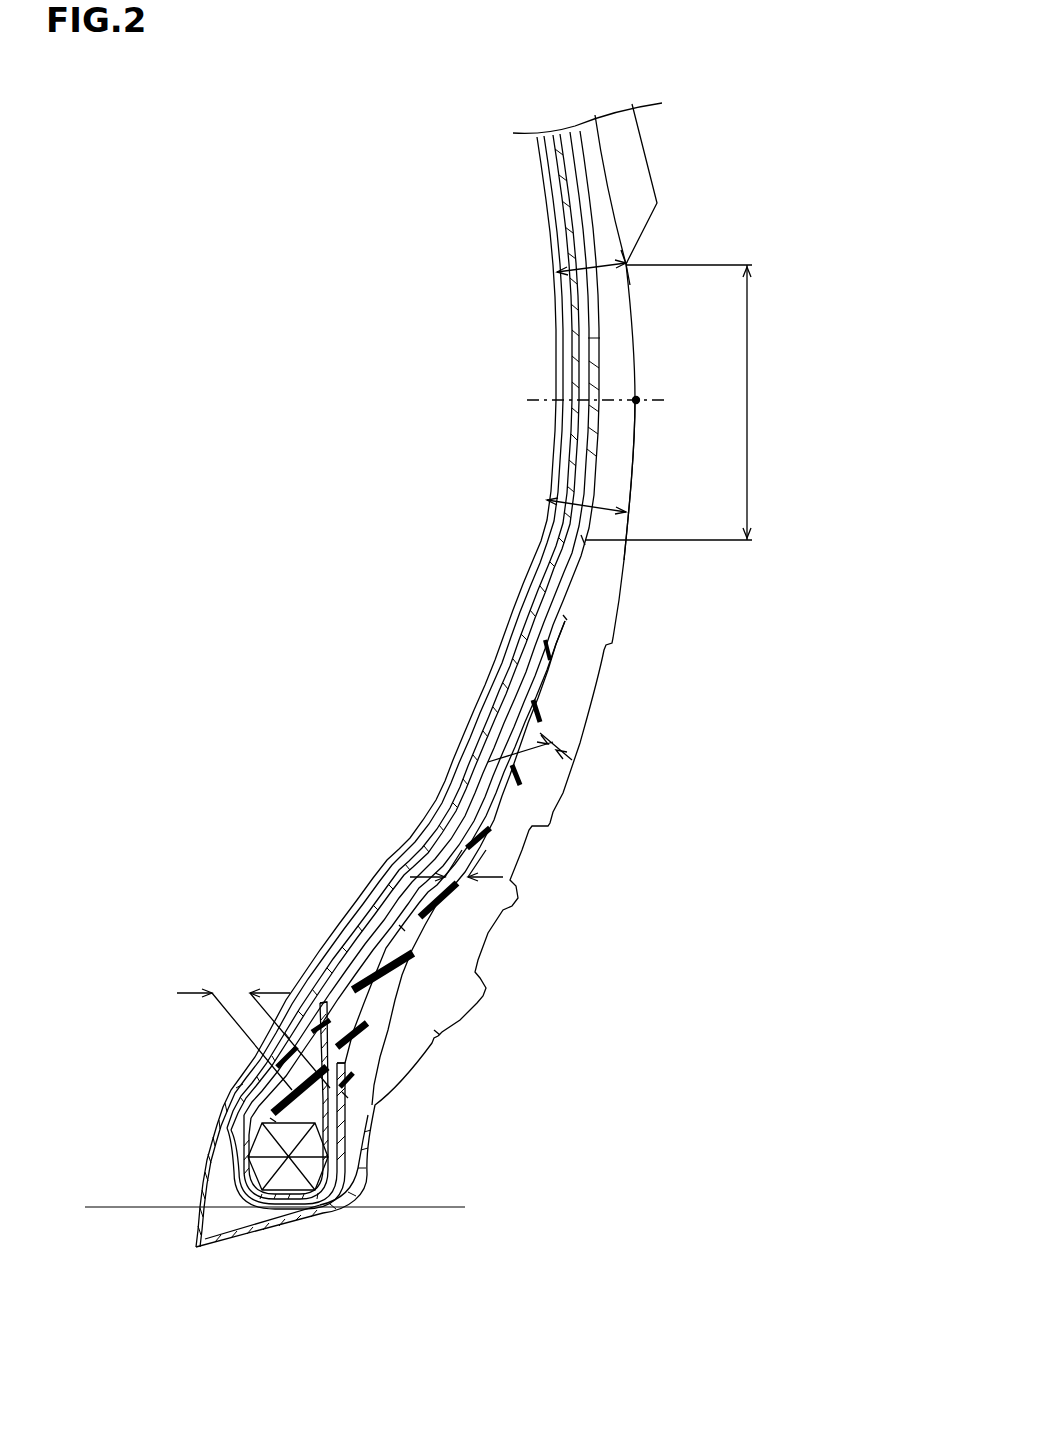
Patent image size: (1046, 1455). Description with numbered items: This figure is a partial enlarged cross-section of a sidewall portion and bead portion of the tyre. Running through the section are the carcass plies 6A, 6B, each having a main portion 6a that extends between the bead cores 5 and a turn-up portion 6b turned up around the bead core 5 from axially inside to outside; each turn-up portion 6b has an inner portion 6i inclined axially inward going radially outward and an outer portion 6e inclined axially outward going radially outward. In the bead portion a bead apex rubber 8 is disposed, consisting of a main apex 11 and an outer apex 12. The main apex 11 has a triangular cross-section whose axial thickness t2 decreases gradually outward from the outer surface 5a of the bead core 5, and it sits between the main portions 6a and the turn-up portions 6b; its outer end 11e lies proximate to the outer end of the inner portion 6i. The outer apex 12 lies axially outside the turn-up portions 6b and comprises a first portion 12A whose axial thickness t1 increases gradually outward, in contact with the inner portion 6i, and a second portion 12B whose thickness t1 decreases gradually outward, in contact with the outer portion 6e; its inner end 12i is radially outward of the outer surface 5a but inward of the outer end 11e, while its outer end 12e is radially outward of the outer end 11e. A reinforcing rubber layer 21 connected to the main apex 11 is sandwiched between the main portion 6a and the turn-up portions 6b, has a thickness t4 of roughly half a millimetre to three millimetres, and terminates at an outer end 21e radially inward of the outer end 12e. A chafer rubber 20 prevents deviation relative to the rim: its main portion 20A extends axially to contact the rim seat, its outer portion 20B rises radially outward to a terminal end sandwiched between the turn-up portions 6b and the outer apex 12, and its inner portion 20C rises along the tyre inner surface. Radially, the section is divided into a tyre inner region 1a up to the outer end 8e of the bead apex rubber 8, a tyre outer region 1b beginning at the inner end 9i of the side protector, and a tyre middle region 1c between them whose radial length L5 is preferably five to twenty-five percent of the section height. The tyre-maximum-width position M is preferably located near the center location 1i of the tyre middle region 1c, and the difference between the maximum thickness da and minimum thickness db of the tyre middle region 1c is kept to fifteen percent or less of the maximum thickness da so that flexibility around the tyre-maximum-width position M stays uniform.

The tyre inner region 1a is at (568, 987).
The tyre outer region 1b is at (680, 160).
The tyre middle region 1c is at (777, 448).
The center location of the tyre middle region 1i is at (540, 396).
The bead core 5 is at (265, 1166).
The outer surface of the bead core 5a is at (275, 1122).
The carcass ply 6A is at (492, 632).
The carcass ply 6B is at (362, 651).
The main portion 6a is at (520, 677).
The turn-up portion 6b is at (527, 733).
The outer portion 6e is at (402, 928).
The inner portion 6i is at (330, 1080).
The bead apex rubber 8 is at (225, 1062).
The outer end of the bead apex rubber 8e is at (583, 540).
The inner end of the side protector 9i is at (626, 264).
The main apex 11 is at (290, 1087).
The outer end of the main apex 11e is at (437, 1032).
The outer apex 12 is at (246, 1062).
The first portion 12A is at (350, 1052).
The second portion 12B is at (385, 945).
The outer end of the outer apex 12e is at (680, 571).
The inner end of the outer apex 12i is at (345, 1095).
The chafer rubber 20 is at (308, 1231).
The main portion of the chafer rubber 20A is at (272, 1220).
The outer portion of the chafer rubber 20B is at (368, 1221).
The inner portion of the chafer rubber 20C is at (205, 1200).
The reinforcing rubber layer 21 is at (390, 913).
The outer end of the reinforcing rubber layer 21e is at (567, 615).
The tyre-maximum-width position M is at (640, 398).
The length of the tyre middle region L5 is at (687, 402).
The maximum thickness da is at (590, 505).
The minimum thickness db is at (600, 262).
The thickness of the outer apex t1 is at (480, 870).
The thickness of the main apex t2 is at (253, 1028).
The thickness of the reinforcing rubber layer t4 is at (553, 745).